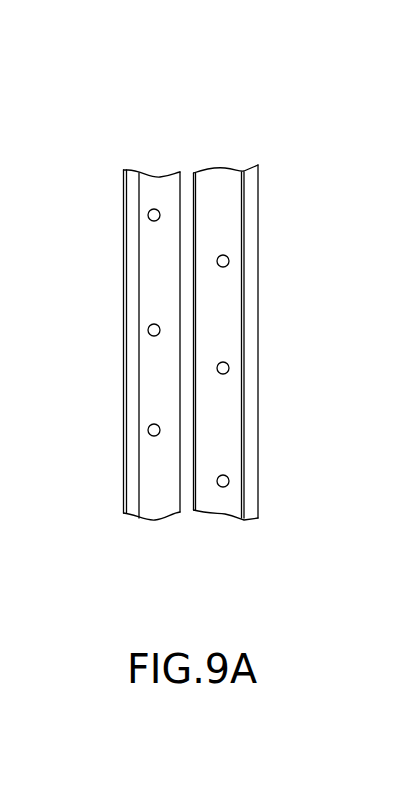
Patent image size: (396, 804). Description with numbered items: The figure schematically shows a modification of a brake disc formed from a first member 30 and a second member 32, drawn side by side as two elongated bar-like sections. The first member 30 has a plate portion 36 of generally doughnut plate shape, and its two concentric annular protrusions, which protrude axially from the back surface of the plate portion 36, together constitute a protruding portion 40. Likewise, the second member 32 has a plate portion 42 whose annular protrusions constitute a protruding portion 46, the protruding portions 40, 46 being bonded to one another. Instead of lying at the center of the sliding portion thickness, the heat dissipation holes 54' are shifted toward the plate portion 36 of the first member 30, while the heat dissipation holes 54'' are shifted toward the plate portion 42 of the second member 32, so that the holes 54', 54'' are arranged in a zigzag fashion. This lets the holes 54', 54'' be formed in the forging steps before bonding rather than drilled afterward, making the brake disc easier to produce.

The first member 30 is at (104, 127).
The second member 32 is at (266, 129).
The plate portion 36 is at (130, 343).
The plate portion 42 is at (250, 335).
The protruding portion 40 is at (158, 542).
The protruding portion 46 is at (217, 542).
The heat dissipation holes 54' is at (106, 320).
The heat dissipation holes 54'' is at (272, 363).